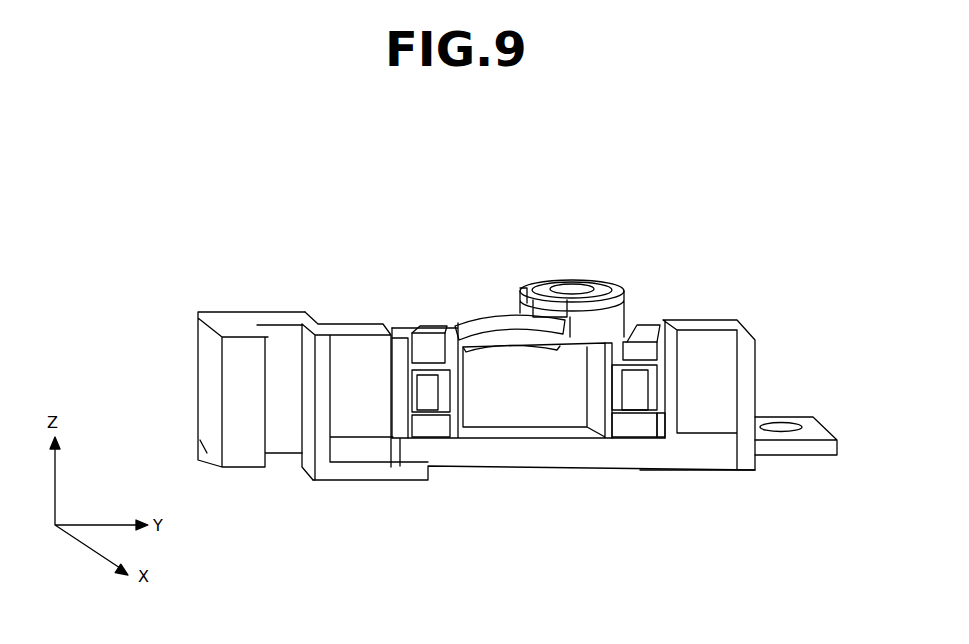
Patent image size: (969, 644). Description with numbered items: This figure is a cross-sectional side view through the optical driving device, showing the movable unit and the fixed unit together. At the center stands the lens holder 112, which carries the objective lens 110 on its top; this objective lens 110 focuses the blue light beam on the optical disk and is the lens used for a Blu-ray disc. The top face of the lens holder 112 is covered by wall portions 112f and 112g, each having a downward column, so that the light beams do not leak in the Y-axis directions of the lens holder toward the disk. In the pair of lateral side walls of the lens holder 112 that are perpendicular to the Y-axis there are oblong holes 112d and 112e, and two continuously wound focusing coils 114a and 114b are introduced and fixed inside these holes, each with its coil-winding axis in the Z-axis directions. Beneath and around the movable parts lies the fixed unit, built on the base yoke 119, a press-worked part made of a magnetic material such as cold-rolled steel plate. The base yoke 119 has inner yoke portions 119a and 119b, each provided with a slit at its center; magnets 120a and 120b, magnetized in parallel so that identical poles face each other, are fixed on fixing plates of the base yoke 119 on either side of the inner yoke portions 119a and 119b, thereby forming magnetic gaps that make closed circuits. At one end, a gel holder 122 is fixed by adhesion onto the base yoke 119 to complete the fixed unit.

The objective lens 110 is at (577, 281).
The lens holder 112 is at (548, 383).
The oblong hole 112d is at (658, 393).
The oblong hole 112e is at (403, 393).
The wall portion 112f is at (640, 337).
The wall portion 112g is at (432, 352).
The focusing coil 114a is at (630, 387).
The focusing coil 114b is at (453, 415).
The base yoke 119 is at (773, 427).
The inner yoke portion 119a is at (643, 383).
The inner yoke portion 119b is at (430, 390).
The magnet 120a is at (717, 338).
The magnet 120b is at (357, 325).
The gel holder 122 is at (253, 372).